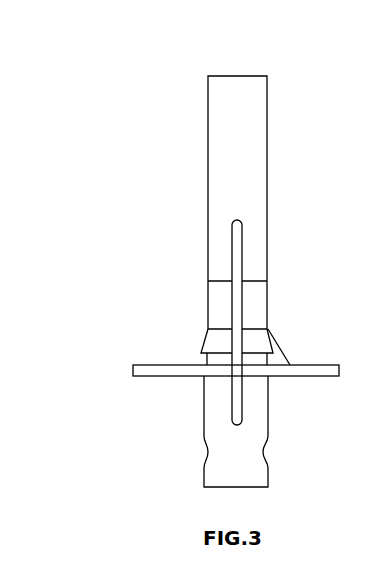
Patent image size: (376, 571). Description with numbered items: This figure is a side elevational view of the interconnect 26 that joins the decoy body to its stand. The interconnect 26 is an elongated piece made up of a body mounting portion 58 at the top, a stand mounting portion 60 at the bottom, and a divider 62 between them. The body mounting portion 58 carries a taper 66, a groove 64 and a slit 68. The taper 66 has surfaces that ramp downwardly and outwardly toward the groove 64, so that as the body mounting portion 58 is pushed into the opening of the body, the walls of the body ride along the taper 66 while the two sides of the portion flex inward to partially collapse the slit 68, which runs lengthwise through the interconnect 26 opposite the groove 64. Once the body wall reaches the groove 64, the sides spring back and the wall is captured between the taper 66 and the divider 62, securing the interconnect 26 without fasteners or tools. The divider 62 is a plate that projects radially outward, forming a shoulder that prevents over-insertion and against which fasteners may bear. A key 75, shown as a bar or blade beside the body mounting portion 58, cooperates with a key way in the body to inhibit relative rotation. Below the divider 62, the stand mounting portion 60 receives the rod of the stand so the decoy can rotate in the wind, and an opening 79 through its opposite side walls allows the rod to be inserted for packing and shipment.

The interconnect 26 is at (140, 78).
The body mounting portion 58 is at (267, 180).
The slit 68 is at (232, 250).
The taper 66 is at (202, 340).
The groove 64 is at (205, 356).
The key 75 is at (279, 347).
The divider 62 is at (133, 366).
The stand mounting portion 60 is at (203, 407).
The opening 79 is at (268, 445).